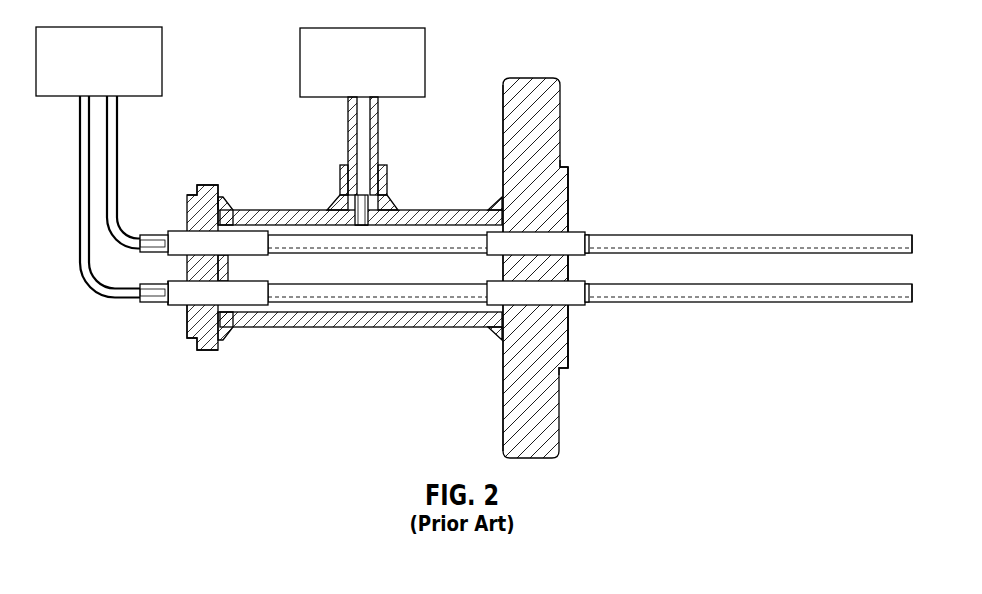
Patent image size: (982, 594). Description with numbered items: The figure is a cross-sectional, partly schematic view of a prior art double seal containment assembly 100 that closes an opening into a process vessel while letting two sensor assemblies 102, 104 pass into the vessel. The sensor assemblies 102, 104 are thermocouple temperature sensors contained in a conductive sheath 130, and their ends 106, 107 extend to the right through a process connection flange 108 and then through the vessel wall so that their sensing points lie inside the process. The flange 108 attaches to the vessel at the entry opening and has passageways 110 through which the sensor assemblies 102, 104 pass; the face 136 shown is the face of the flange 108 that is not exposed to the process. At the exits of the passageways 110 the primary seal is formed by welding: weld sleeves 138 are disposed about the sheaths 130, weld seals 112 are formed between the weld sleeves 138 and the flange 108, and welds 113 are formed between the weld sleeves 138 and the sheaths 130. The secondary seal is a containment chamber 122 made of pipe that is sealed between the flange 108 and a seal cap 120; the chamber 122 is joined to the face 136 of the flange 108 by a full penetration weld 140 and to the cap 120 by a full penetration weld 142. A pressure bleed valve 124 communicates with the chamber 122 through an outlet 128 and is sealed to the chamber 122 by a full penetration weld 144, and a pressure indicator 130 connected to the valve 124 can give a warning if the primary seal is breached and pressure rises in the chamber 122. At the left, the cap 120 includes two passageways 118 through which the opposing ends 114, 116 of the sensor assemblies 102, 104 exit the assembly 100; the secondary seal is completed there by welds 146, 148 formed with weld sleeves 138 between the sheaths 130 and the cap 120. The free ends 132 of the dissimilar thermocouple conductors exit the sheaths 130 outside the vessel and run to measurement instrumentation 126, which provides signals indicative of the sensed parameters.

The sealed containment assembly 100 is at (614, 95).
The sensor assembly 102 is at (784, 224).
The sensor assembly 104 is at (763, 306).
The end 106 is at (913, 242).
The end 107 is at (913, 292).
The process connection flange 108 is at (538, 78).
The sensor passageways 110 is at (550, 225).
The weld seal 112 is at (568, 232).
The weld 113 is at (587, 254).
The opposing end 114 is at (143, 233).
The opposing end 116 is at (147, 303).
The passageways 118 is at (197, 213).
The seal cap 120 is at (210, 185).
The secondary containment chamber 122 is at (325, 268).
The pressure bleed valve 124 is at (348, 113).
The instrumentation 126 is at (82, 74).
The outlet 128 is at (364, 230).
The sheath 130 is at (344, 74).
The free ends 132 is at (108, 172).
The opposing face 136 is at (503, 135).
The weld sleeves 138 is at (243, 248).
The weld 140 is at (495, 327).
The weld 142 is at (229, 203).
The weld 144 is at (390, 207).
The welds 146 is at (185, 307).
The welds 148 is at (170, 285).